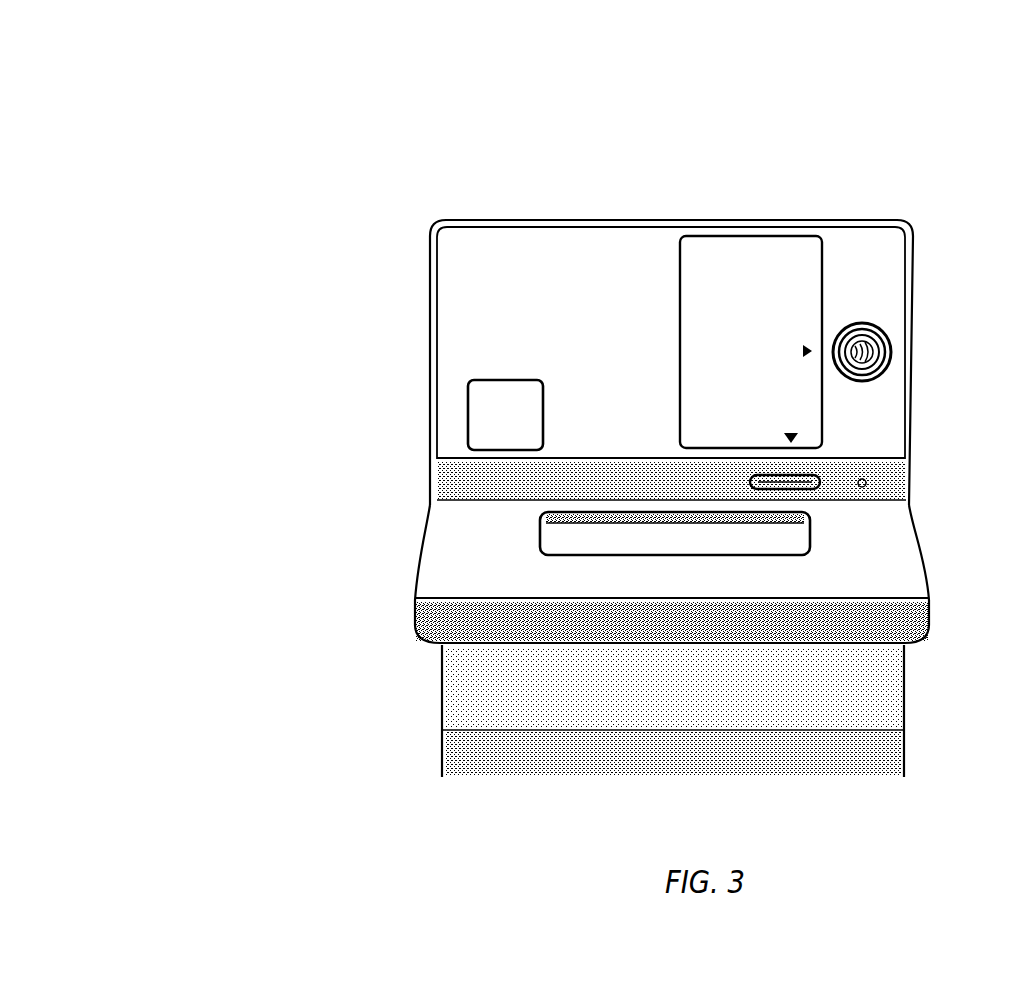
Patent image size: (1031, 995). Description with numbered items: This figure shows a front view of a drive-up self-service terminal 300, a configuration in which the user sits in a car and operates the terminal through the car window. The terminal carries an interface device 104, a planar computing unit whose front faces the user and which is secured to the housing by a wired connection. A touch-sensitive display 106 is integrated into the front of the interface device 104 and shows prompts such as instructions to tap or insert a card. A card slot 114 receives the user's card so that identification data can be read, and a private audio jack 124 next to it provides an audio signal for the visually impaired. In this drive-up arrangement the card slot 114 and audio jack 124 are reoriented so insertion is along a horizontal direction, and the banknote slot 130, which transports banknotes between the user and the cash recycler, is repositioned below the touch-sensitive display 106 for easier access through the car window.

The drive-up self-service terminal 300 is at (164, 78).
The interface device 104 is at (432, 287).
The touch-sensitive display 106 is at (462, 361).
The banknote slot 130 is at (560, 530).
The card slot 114 is at (805, 486).
The audio jack 124 is at (868, 483).